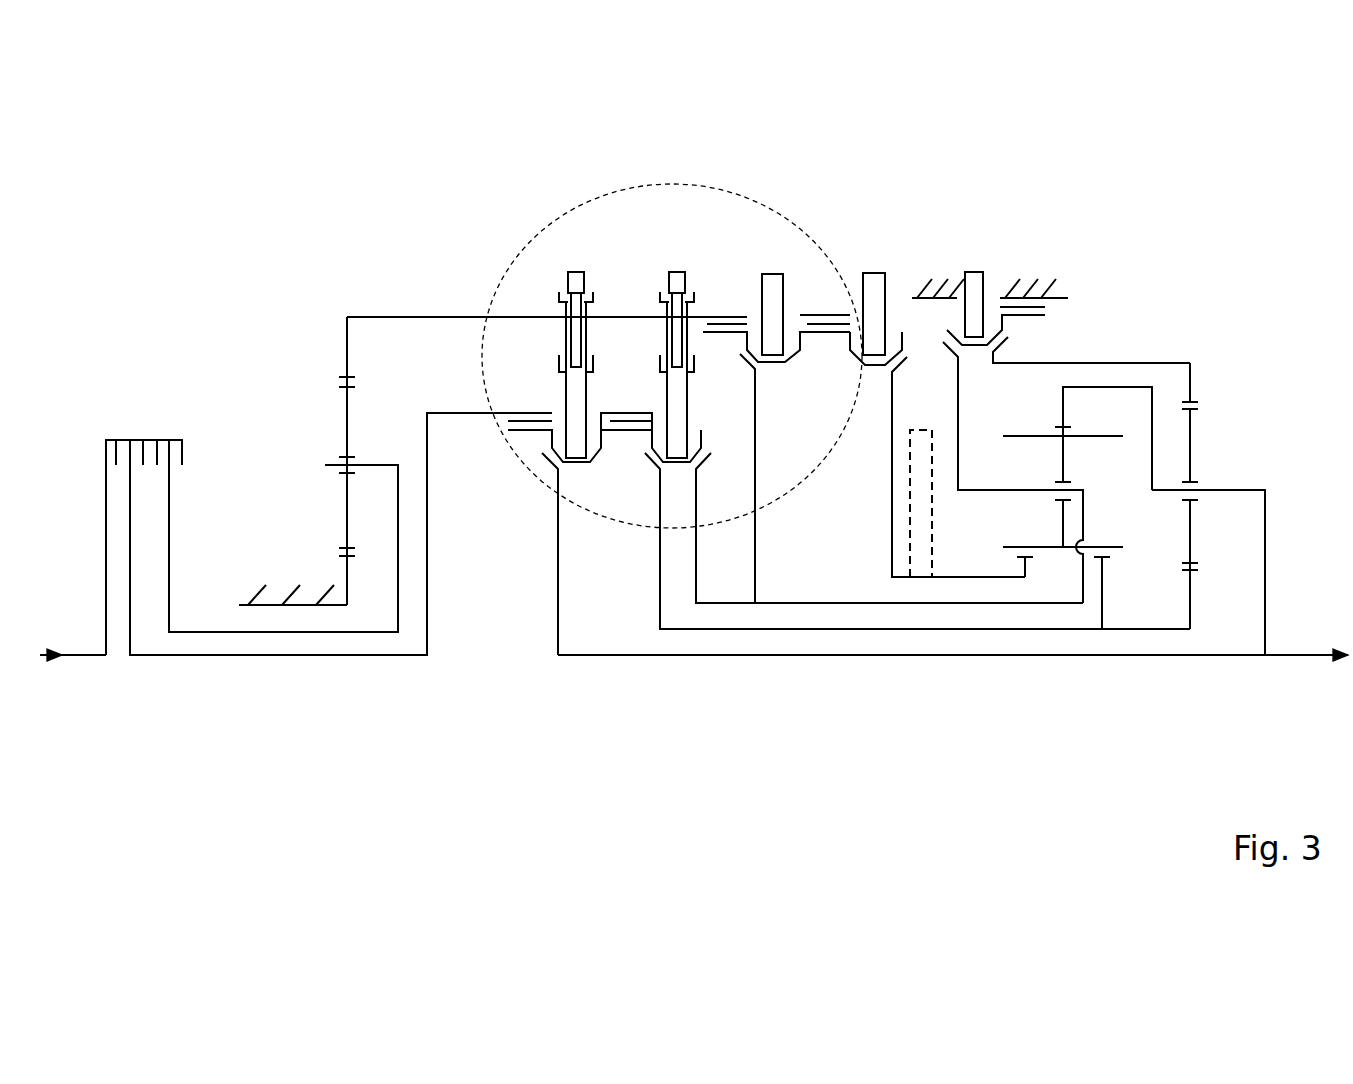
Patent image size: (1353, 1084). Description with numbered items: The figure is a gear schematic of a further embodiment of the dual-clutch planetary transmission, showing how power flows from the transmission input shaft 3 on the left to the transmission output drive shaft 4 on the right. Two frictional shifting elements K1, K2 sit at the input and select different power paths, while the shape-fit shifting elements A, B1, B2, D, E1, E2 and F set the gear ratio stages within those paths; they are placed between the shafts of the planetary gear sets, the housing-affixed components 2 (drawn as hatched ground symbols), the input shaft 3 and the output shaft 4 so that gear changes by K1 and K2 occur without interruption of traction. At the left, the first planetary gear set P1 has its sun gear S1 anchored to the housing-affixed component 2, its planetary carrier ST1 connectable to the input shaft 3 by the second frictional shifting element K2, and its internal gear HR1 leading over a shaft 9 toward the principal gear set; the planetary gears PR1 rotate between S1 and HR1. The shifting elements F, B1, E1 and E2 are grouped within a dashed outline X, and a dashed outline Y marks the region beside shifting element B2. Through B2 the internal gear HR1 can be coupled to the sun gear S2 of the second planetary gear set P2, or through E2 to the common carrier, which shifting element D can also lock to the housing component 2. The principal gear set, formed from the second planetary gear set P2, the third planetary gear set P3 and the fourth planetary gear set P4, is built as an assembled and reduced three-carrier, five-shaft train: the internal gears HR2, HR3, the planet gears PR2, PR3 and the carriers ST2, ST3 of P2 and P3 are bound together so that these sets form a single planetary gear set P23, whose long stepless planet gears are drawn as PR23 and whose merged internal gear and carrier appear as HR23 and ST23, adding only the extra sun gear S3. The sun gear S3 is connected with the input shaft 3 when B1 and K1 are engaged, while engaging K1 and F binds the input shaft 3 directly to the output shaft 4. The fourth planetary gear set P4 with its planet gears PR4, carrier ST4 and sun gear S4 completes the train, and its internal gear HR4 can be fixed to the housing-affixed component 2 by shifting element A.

The housing-affixed component 2 is at (260, 600).
The transmission input shaft 3 is at (83, 662).
The transmission output drive shaft 4 is at (1287, 660).
The shaft 9 is at (403, 317).
The first frictional shifting element K1 is at (326, 524).
The second frictional shifting element K2 is at (329, 524).
The first gear group X is at (503, 275).
The second gear group Y is at (922, 474).
The shape-fit shifting element F is at (560, 463).
The shape-fit shifting element B1 is at (901, 450).
The shape-fit shifting element E1 is at (889, 528).
The shape-fit shifting element E2 is at (776, 438).
The shape-fit shifting element D is at (1000, 466).
The shape-fit shifting element A is at (1068, 320).
The shape-fit shifting element B2 is at (937, 425).
The first planetary gear set P1 is at (331, 380).
The internal gear HR1 is at (345, 330).
The planetary gear PR1 is at (345, 437).
The planetary carrier ST1 is at (372, 465).
The sun gear S1 is at (347, 572).
The second planetary gear set P2 is at (1110, 469).
The third planetary gear set P3 is at (1110, 469).
The planetary gear set P23 is at (1110, 469).
The internal gear HR2 is at (1201, 336).
The internal gear HR3 is at (1201, 336).
The internal gear HR23 is at (1105, 385).
The planet gear PR2 is at (973, 625).
The planet gear PR3 is at (973, 625).
The long stepless planetary gear PR23 is at (1013, 437).
The carrier ST2 is at (1127, 629).
The carrier ST3 is at (1127, 629).
The carrier ST23 is at (1127, 629).
The sun gear S2 is at (1025, 565).
The sun gear S3 is at (1103, 580).
The fourth planetary gear set P4 is at (1221, 470).
The internal gear HR4 is at (1190, 375).
The planetary gear PR4 is at (1193, 430).
The carrier ST4 is at (1233, 490).
The sun gear S4 is at (1195, 580).